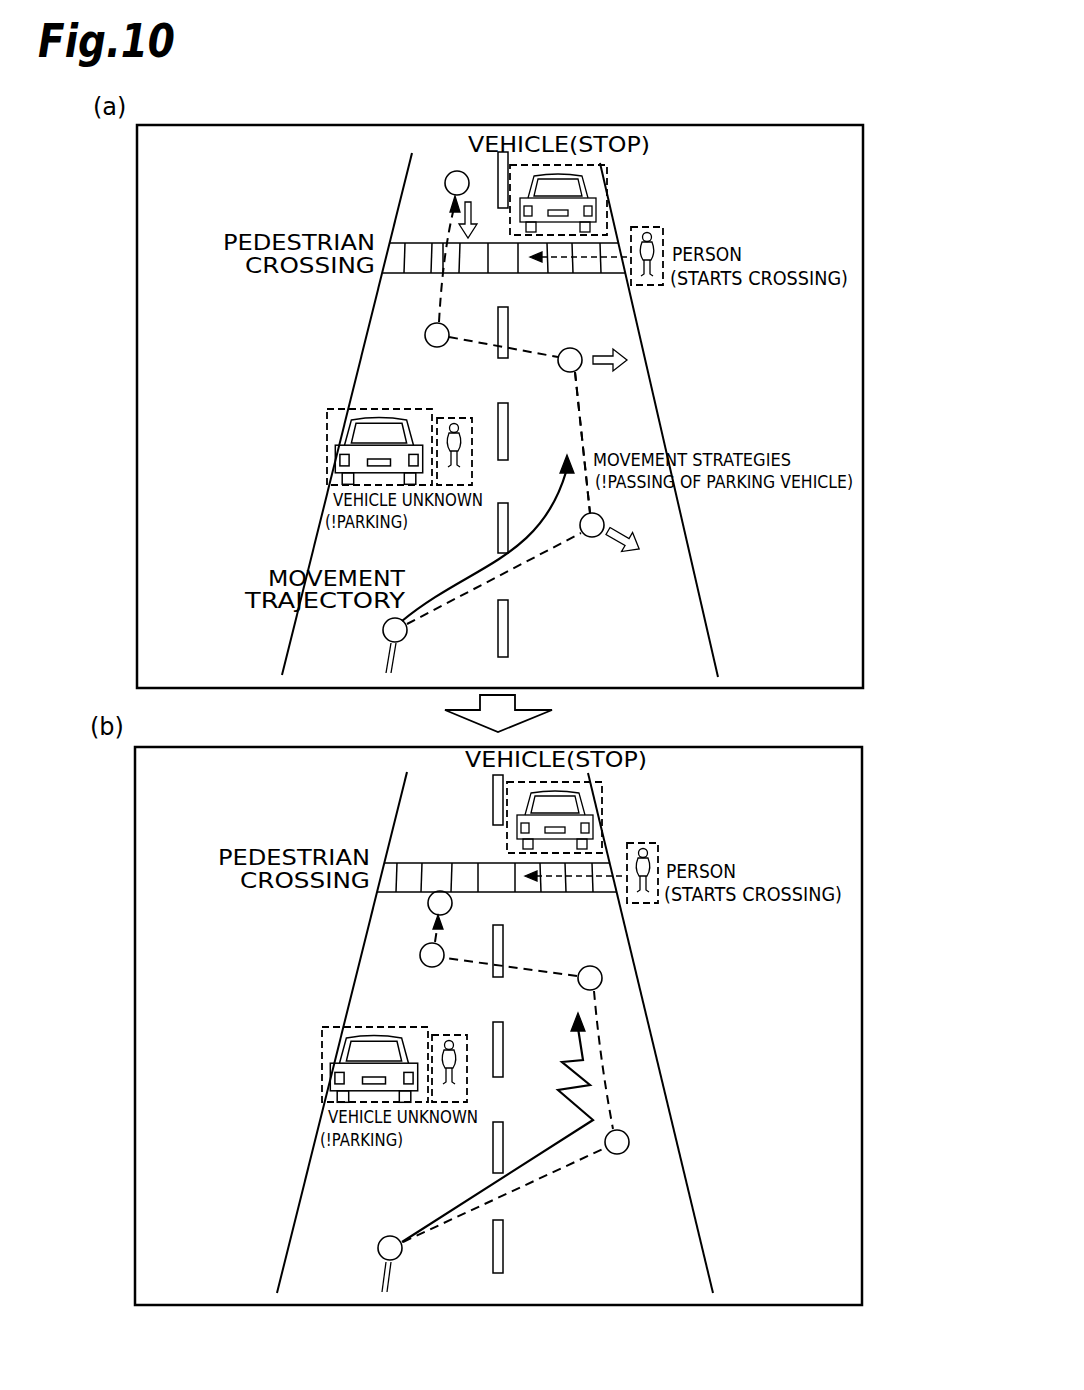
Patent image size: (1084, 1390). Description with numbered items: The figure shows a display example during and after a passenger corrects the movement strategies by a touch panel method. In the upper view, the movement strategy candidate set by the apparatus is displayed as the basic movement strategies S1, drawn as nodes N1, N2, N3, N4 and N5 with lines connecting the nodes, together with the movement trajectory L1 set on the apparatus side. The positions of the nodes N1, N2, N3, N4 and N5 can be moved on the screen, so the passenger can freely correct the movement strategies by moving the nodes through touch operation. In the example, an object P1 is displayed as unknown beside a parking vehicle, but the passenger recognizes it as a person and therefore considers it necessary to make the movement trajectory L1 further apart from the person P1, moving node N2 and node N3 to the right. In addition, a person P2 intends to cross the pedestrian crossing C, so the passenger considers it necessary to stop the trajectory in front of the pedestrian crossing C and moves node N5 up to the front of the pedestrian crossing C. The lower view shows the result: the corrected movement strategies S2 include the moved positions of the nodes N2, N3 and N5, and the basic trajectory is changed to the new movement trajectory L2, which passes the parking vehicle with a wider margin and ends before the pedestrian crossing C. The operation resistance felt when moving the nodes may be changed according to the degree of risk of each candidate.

The node N1 is at (407, 630).
The node N2 is at (603, 517).
The node N3 is at (582, 355).
The node N4 is at (425, 337).
The node N5 is at (445, 181).
The object P1 is at (448, 418).
The person P2 is at (655, 228).
The movement strategies S1 is at (583, 420).
The movement strategies S2 is at (606, 1040).
The pedestrian crossing C is at (441, 246).
The movement trajectory L1 is at (455, 579).
The movement trajectory L2 is at (450, 1202).